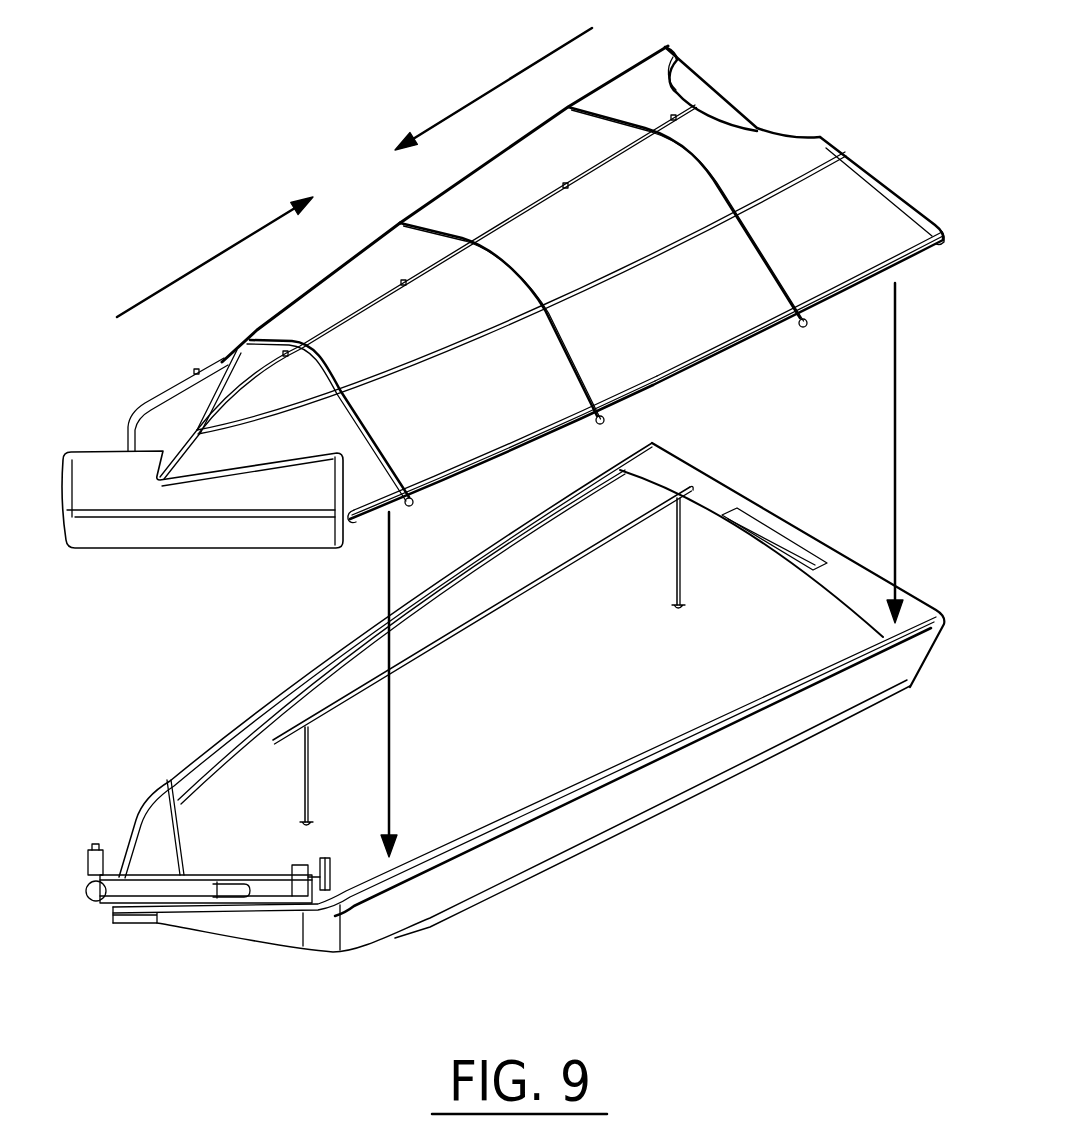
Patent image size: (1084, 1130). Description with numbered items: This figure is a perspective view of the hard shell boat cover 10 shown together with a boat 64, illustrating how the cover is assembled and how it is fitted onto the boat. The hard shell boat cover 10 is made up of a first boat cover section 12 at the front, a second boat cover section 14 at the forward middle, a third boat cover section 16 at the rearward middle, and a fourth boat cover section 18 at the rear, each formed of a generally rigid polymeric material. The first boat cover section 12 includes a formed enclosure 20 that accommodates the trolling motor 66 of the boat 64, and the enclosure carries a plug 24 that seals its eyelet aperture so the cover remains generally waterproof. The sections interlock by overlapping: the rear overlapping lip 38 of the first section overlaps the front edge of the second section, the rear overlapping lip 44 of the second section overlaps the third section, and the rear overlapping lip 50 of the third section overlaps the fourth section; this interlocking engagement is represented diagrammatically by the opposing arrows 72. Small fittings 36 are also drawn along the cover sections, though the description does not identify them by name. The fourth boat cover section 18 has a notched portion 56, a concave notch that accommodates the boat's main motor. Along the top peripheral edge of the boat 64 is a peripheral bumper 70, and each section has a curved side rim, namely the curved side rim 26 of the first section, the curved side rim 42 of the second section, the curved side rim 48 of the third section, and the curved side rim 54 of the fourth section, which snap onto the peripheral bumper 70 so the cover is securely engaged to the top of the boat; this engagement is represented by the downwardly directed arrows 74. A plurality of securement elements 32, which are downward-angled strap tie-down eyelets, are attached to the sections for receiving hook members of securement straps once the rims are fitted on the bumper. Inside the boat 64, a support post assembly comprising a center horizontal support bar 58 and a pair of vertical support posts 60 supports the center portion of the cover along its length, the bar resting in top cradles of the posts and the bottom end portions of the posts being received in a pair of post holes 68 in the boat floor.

The hard shell boat cover 10 is at (740, 44).
The first boat cover section 12 is at (178, 398).
The second boat cover section 14 is at (328, 305).
The third boat cover section 16 is at (491, 182).
The fourth boat cover section 18 is at (640, 92).
The formed enclosure 20 is at (191, 495).
The plug 24 is at (70, 550).
The curved side rim 26 is at (352, 524).
The securement elements 32 is at (806, 326).
The strap fasteners 36 is at (676, 118).
The rear overlapping lip 38 is at (382, 443).
The curved side rim 42 is at (500, 455).
The rear overlapping lip 44 is at (571, 346).
The curved side rim 48 is at (711, 356).
The rear overlapping lip 50 is at (768, 258).
The curved side rim 54 is at (903, 260).
The notched portion 56 is at (708, 93).
The center horizontal support bar 58 is at (508, 598).
The vertical support posts 60 is at (681, 563).
The boat 64 is at (608, 830).
The trolling motor 66 is at (170, 877).
The post holes 68 is at (676, 608).
The peripheral bumper 70 is at (706, 737).
The opposing arrows 72 is at (213, 257).
The downwardly directed arrows 74 is at (898, 418).